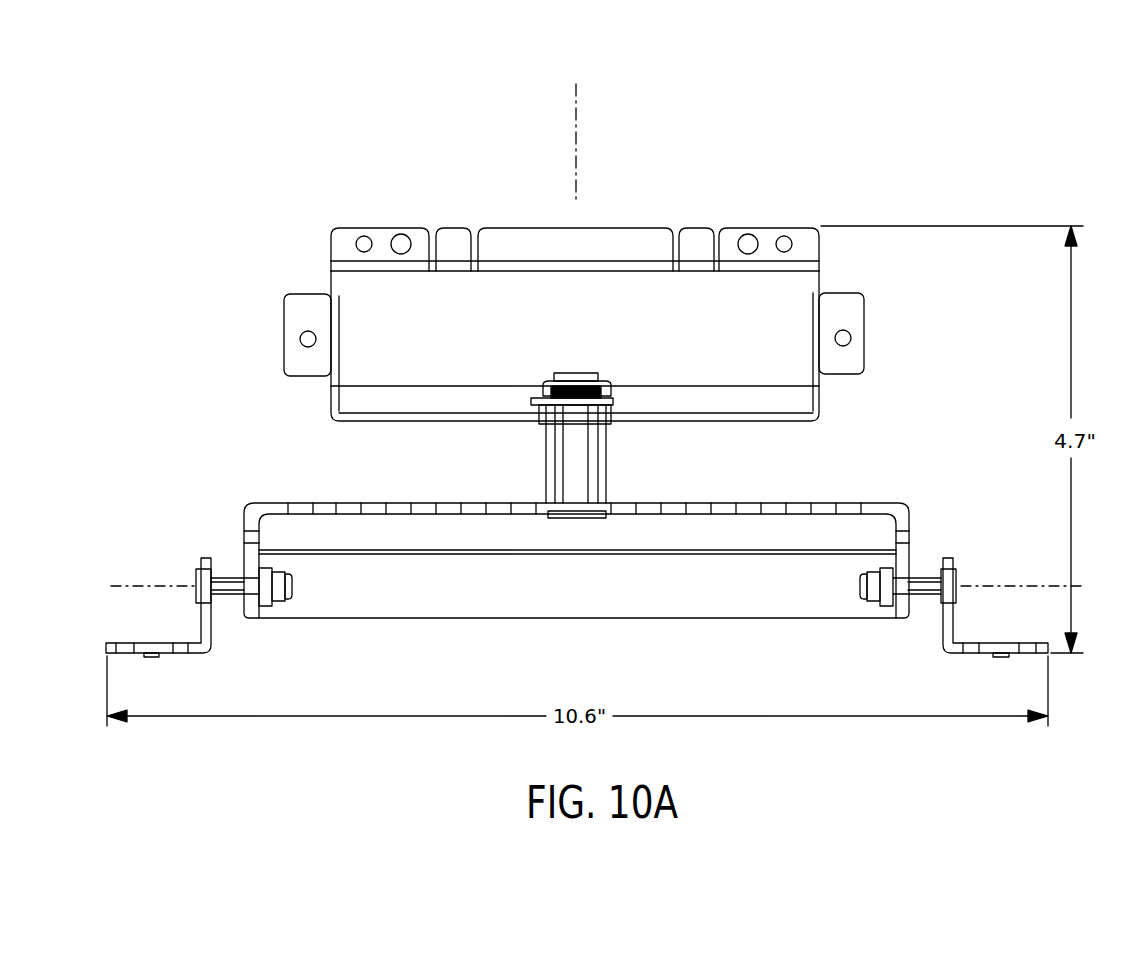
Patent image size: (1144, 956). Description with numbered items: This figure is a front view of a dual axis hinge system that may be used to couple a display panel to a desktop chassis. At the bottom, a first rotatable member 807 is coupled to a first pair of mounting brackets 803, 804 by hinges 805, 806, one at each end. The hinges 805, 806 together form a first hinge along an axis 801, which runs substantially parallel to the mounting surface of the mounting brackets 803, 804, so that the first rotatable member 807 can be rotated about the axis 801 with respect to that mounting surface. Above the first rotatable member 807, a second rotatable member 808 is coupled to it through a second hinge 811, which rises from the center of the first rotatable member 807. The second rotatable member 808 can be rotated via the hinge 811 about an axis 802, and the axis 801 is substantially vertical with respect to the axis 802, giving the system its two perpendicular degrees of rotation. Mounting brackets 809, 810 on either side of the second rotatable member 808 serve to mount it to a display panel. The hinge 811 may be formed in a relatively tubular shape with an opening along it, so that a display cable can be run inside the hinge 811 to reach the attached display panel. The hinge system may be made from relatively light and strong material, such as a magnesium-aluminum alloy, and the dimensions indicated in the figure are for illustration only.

The axis 801 is at (113, 560).
The axis 802 is at (656, 108).
The mounting bracket 803 is at (152, 640).
The mounting bracket 804 is at (1014, 640).
The hinge 805 is at (302, 593).
The hinge 806 is at (848, 590).
The first rotatable member 807 is at (568, 535).
The second rotatable member 808 is at (591, 332).
The mounting bracket 809 is at (300, 315).
The mounting bracket 810 is at (863, 315).
The second hinge 811 is at (607, 456).